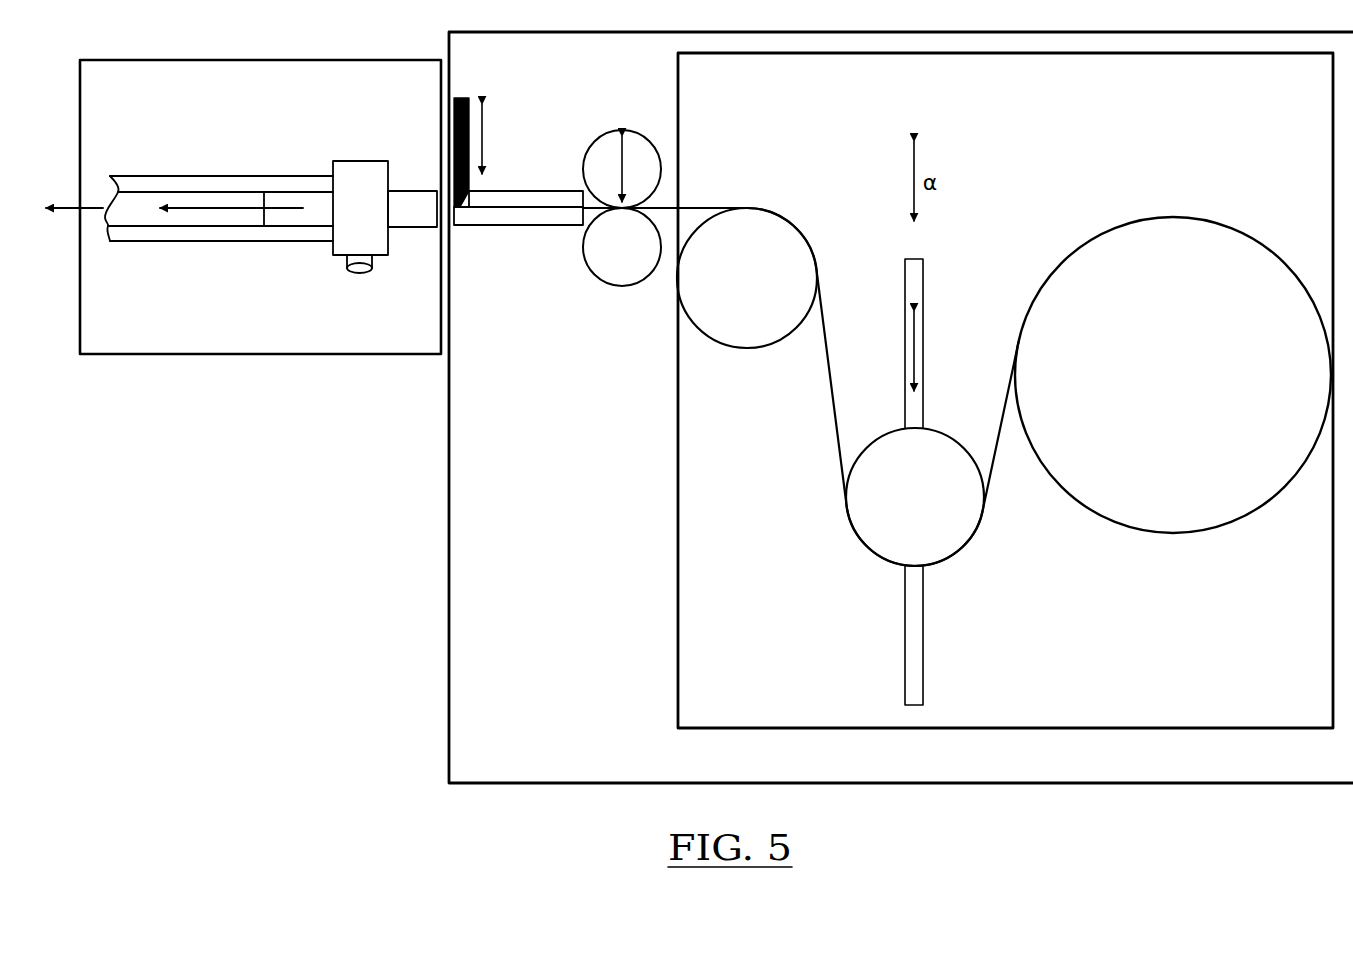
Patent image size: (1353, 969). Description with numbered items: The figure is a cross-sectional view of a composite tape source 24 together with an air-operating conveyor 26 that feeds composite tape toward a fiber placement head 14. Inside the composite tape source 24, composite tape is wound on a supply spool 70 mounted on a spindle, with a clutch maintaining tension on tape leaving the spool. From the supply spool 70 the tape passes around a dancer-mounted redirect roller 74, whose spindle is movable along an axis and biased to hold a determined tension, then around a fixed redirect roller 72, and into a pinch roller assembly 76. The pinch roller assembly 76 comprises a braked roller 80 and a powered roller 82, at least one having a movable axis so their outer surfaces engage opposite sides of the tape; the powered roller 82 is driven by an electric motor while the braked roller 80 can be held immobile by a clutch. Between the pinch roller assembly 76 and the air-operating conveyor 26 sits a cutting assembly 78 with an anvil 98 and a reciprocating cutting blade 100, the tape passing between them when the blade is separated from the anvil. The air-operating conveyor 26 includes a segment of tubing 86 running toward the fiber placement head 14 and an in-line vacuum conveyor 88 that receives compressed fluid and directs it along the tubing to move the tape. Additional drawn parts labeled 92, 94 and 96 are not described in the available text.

The fiber placement head 14 is at (122, 183).
The composite tape source 24 is at (940, 790).
The air-operating conveyor 26 is at (207, 370).
The supply spool 70 is at (1170, 217).
The fixed redirect roller 72 is at (776, 209).
The dancer-mounted redirect roller 74 is at (876, 566).
The pinch roller assembly 76 is at (620, 201).
The cutting assembly 78 is at (479, 235).
The braked roller 80 is at (620, 287).
The powered roller 82 is at (603, 128).
The segment of tubing 86 is at (242, 173).
The in-line vacuum conveyor 88 is at (346, 158).
The arm 92 is at (418, 228).
The divider 94 is at (302, 218).
The nozzle 96 is at (360, 276).
The anvil 98 is at (518, 191).
The reciprocating cutting blade 100 is at (463, 96).